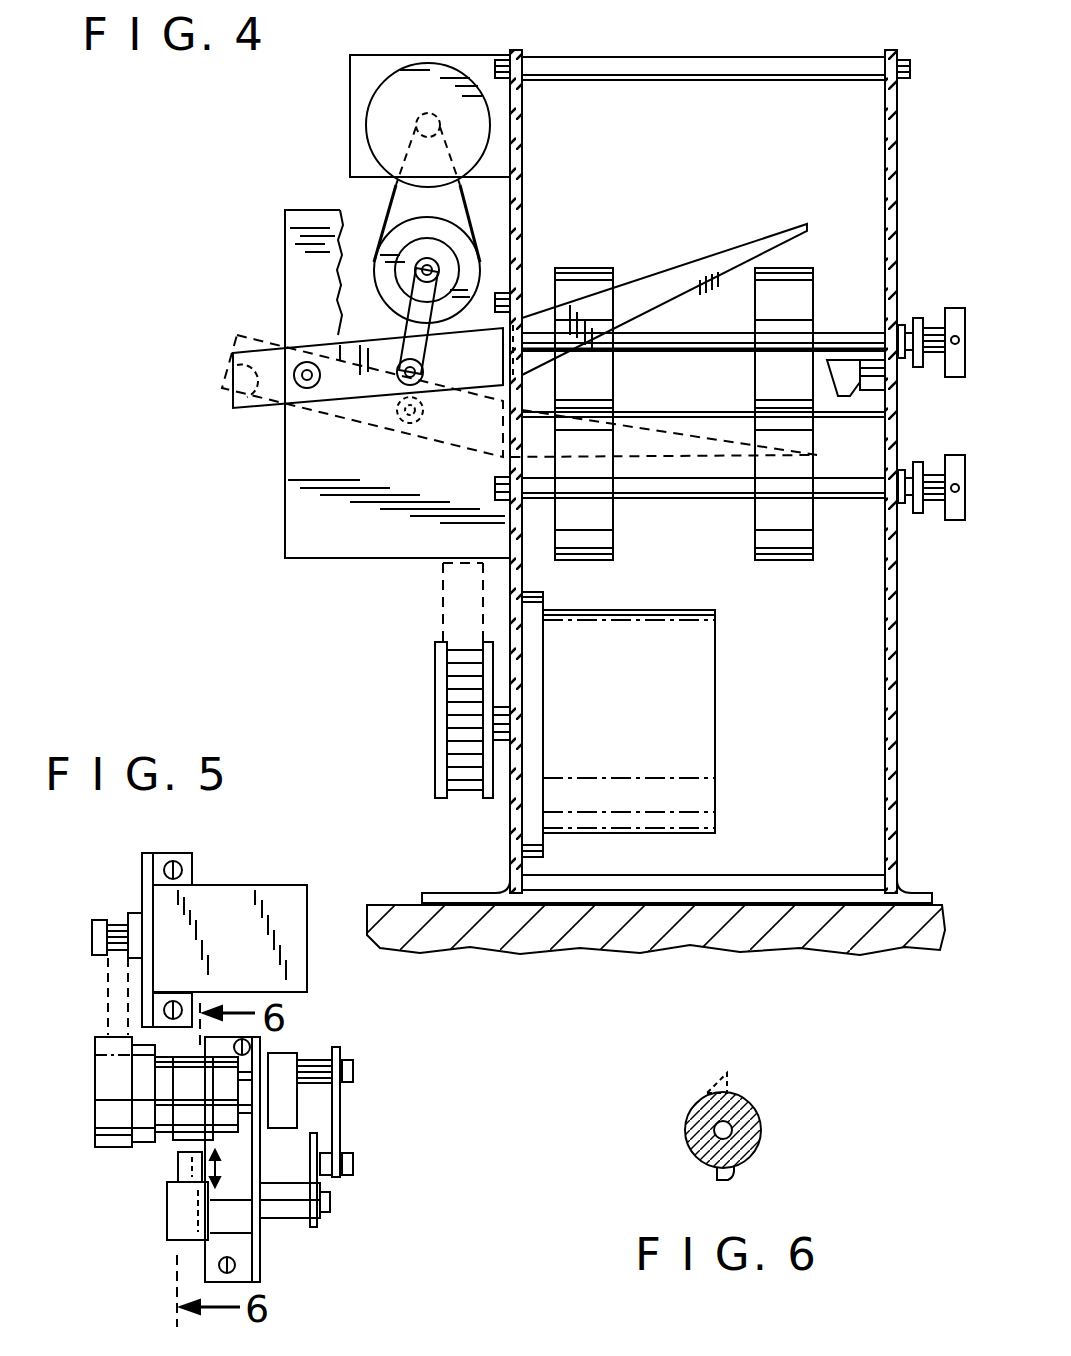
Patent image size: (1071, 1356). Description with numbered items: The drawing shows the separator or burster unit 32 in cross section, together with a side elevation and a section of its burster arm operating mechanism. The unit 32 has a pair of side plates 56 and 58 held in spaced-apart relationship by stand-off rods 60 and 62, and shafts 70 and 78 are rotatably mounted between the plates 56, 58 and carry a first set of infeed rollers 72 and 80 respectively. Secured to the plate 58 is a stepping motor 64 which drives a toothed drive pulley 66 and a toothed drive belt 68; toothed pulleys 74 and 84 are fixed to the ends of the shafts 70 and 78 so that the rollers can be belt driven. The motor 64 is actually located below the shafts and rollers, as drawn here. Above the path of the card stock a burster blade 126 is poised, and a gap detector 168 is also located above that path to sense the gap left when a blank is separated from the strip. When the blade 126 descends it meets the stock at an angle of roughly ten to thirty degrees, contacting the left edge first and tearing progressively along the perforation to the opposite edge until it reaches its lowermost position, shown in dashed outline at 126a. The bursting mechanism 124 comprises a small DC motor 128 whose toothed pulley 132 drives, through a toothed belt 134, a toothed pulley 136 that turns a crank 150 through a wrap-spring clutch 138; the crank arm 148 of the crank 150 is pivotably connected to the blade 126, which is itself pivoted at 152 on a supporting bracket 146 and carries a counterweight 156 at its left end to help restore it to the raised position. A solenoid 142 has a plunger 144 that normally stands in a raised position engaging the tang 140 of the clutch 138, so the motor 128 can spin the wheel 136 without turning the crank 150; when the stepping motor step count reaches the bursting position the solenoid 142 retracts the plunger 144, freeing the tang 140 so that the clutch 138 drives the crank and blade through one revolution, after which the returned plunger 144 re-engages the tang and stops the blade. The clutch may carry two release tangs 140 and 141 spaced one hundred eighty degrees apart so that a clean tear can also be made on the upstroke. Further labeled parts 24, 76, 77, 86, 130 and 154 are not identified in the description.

In FIG. 4, the web carrier bar 24 is at (672, 412).
In FIG. 4, the unit 32 is at (230, 597).
In FIG. 4, the side plate 56 is at (897, 128).
In FIG. 4, the side plate 58 is at (522, 142).
In FIG. 4, the stand-off rod 60 is at (723, 80).
In FIG. 4, the stand-off rod 62 is at (712, 875).
In FIG. 4, the stepping motor 64 is at (612, 762).
In FIG. 4, the toothed drive pulley 66 is at (433, 735).
In FIG. 4, the toothed drive belt 68 is at (446, 590).
In FIG. 4, the shaft 70 is at (696, 333).
In FIG. 4, the infeed roller 72 is at (613, 270).
In FIG. 4, the toothed pulley 74 is at (952, 378).
In FIG. 4, the lock nut 76 is at (930, 318).
In FIG. 4, the right roller 77 is at (810, 266).
In FIG. 4, the shaft 78 is at (535, 500).
In FIG. 4, the infeed roller 80 is at (590, 562).
In FIG. 4, the toothed pulley 84 is at (952, 522).
In FIG. 4, the lower lock nut 86 is at (935, 513).
In FIG. 4, the bursting mechanism 124 is at (348, 180).
In FIG. 5, the bursting mechanism 124 is at (152, 851).
In FIG. 4, the burster blade 126 is at (776, 236).
In FIG. 5, the burster blade 126 is at (303, 1183).
In FIG. 4, the lowermost position of burster blade 126a is at (668, 457).
In FIG. 4, the DC motor 128 is at (478, 118).
In FIG. 5, the DC motor 128 is at (248, 945).
In FIG. 4, the motor mounting plate 130 is at (350, 84).
In FIG. 5, the motor mounting plate 130 is at (193, 858).
In FIG. 4, the toothed pulley 132 is at (415, 122).
In FIG. 5, the toothed pulley 132 is at (118, 920).
In FIG. 4, the toothed belt 134 is at (465, 212).
In FIG. 5, the toothed belt 134 is at (105, 990).
In FIG. 5, the toothed pulley 136 is at (95, 1060).
In FIG. 5, the wrap-spring clutch 138 is at (160, 1102).
In FIG. 6, the wrap-spring clutch 138 is at (756, 1118).
In FIG. 5, the tang 140 is at (185, 1143).
In FIG. 6, the tang 140 is at (715, 1176).
In FIG. 6, the release tang 141 is at (725, 1075).
In FIG. 5, the solenoid 142 is at (170, 1228).
In FIG. 5, the plunger 144 is at (180, 1168).
In FIG. 4, the supporting bracket 146 is at (358, 538).
In FIG. 5, the supporting bracket 146 is at (262, 1256).
In FIG. 4, the crank arm 148 is at (452, 300).
In FIG. 5, the crank arm 148 is at (340, 1125).
In FIG. 4, the crank 150 is at (437, 330).
In FIG. 5, the crank 150 is at (285, 1063).
In FIG. 4, the pivot 152 is at (298, 362).
In FIG. 5, the pivot 152 is at (327, 1203).
In FIG. 4, the pivot bolt 154 is at (500, 462).
In FIG. 4, the counterweight 156 is at (253, 406).
In FIG. 4, the gap detector 168 is at (838, 360).